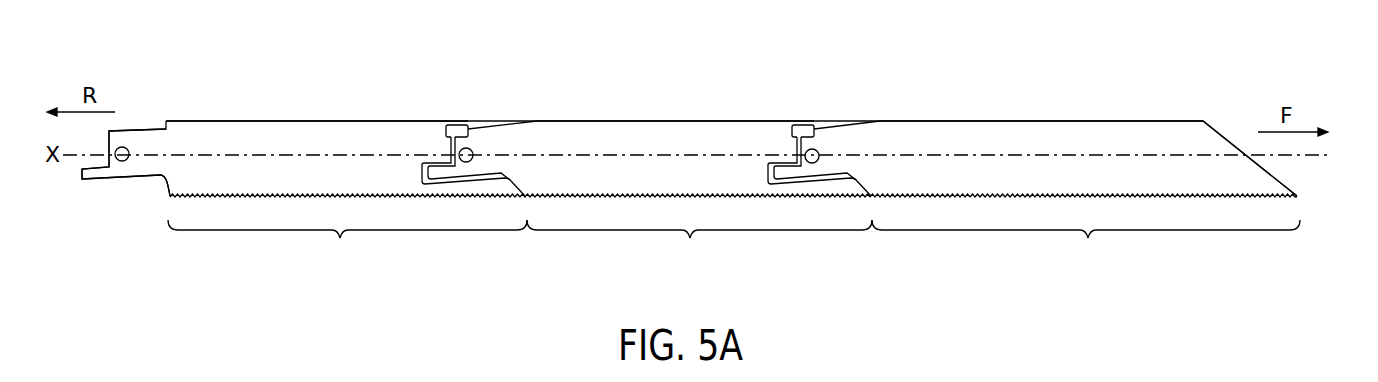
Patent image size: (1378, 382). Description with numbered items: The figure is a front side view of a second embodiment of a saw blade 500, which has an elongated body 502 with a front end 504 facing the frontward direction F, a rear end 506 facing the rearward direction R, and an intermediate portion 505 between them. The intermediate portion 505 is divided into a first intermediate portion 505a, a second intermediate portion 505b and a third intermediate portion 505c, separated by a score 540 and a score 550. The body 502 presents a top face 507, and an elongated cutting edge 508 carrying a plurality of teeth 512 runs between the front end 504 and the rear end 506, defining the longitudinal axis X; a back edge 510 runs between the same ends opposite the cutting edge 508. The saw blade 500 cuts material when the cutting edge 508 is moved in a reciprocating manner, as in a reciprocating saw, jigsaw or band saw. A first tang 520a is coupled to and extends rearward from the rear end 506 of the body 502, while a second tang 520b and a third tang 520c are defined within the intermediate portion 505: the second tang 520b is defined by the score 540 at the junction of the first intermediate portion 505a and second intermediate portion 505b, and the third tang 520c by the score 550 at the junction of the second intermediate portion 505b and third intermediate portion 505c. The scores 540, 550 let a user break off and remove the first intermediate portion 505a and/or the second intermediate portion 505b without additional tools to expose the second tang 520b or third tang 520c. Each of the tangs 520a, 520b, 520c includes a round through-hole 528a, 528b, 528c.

The saw blade 500 is at (884, 81).
The elongated body 502 is at (692, 107).
The front end 504 is at (1224, 139).
The intermediate portion 505 is at (575, 107).
The first intermediate portion 505a is at (347, 246).
The second intermediate portion 505b is at (699, 246).
The third intermediate portion 505c is at (1086, 246).
The rear end 506 is at (163, 178).
The top face 507 is at (1017, 131).
The cutting edge 508 is at (1070, 198).
The back edge 510 is at (318, 121).
The teeth 512 is at (1010, 198).
The first tang 520a is at (103, 172).
The second tang 520b is at (485, 165).
The third tang 520c is at (838, 165).
The round through-hole 528a is at (119, 147).
The round through-hole 528b is at (462, 148).
The round through-hole 528c is at (807, 148).
The score 540 is at (492, 126).
The score 550 is at (836, 125).